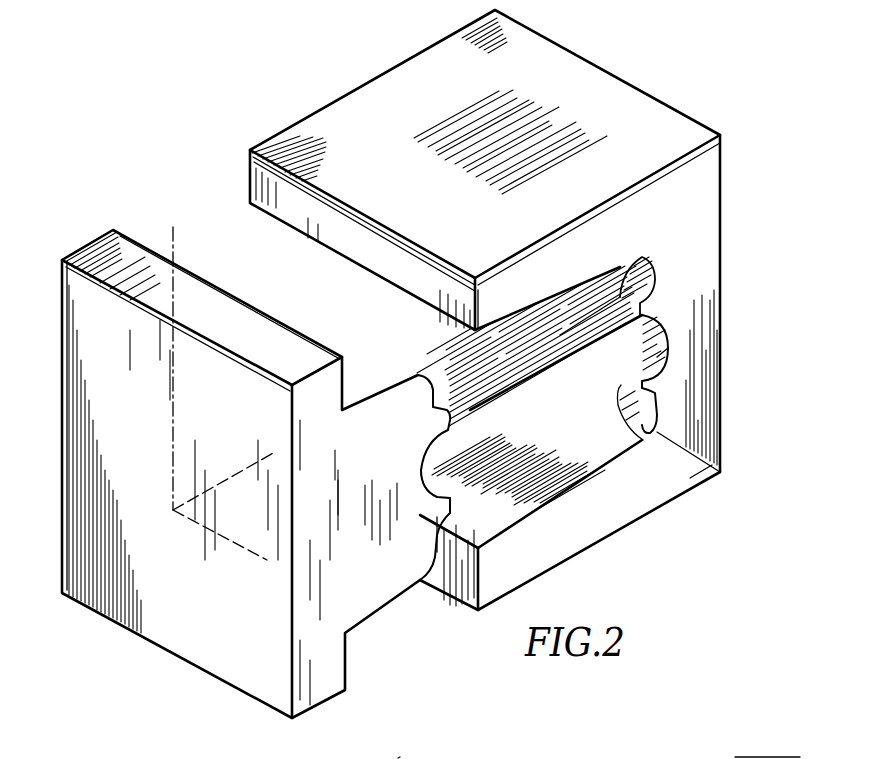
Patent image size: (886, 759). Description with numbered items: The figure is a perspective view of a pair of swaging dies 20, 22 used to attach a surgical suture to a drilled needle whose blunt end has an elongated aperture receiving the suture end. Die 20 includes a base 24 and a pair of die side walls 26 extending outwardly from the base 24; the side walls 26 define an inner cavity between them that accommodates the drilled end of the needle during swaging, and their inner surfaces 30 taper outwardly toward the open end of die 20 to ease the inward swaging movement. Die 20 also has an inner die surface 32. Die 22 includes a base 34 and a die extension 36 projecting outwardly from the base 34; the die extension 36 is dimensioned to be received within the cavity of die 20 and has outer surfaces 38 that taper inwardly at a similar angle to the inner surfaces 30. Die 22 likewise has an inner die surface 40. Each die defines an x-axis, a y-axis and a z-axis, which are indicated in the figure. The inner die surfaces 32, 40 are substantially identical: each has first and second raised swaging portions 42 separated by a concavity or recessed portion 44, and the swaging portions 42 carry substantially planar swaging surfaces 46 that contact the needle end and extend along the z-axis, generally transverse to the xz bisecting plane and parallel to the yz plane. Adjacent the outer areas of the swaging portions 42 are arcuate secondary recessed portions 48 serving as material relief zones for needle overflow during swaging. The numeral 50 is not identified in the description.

The die 20 is at (723, 167).
The die 22 is at (122, 627).
The base 24 is at (698, 286).
The die side walls 26 is at (446, 229).
The inner surfaces 30 is at (526, 427).
The inner die surface 32 is at (358, 268).
The base 34 is at (93, 318).
The die extension 36 is at (400, 573).
The outer surfaces 38 is at (213, 262).
The inner die surface 40 is at (374, 339).
The raised swaging portions 42 is at (640, 313).
The recessed portion 44 is at (668, 358).
The swaging surfaces 46 is at (622, 297).
The secondary recessed portions 48 is at (702, 486).
The element of adjacent figure 50 is at (400, 757).